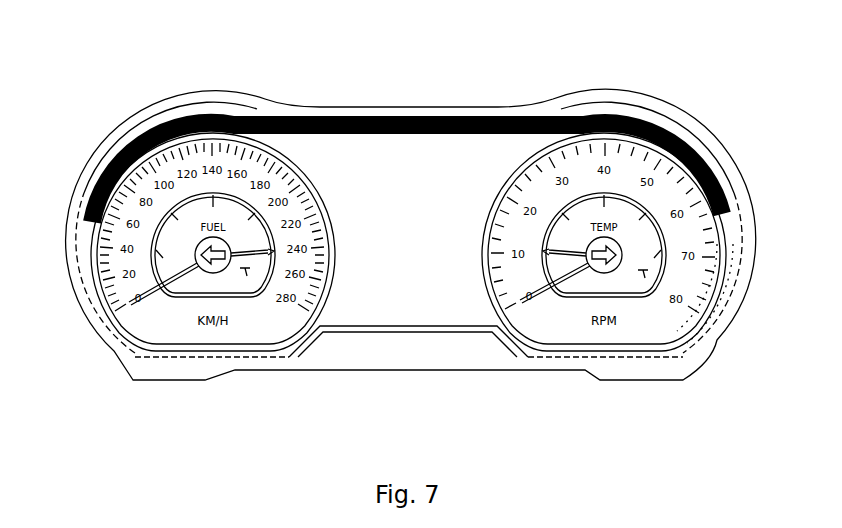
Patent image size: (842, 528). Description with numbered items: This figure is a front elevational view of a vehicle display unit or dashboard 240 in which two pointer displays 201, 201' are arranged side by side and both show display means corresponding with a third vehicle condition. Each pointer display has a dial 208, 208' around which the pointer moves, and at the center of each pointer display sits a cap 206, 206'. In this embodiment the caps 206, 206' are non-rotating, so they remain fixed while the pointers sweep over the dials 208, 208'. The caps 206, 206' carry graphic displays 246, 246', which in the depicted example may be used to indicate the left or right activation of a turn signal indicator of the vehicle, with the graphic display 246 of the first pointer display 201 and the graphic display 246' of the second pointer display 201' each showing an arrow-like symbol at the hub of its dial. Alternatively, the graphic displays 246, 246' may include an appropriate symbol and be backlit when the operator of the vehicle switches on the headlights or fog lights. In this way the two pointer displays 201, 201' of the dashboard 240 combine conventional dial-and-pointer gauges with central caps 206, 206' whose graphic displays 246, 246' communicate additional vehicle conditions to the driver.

The pointer display 201 is at (402, 249).
The pointer display 201' is at (635, 253).
The cap 206 is at (201, 335).
The cap 206' is at (572, 336).
The dial 208 is at (407, 150).
The dial 208' is at (711, 211).
The vehicle display unit or dashboard 240 is at (425, 155).
The graphic display 246 is at (176, 345).
The graphic display 246' is at (551, 339).